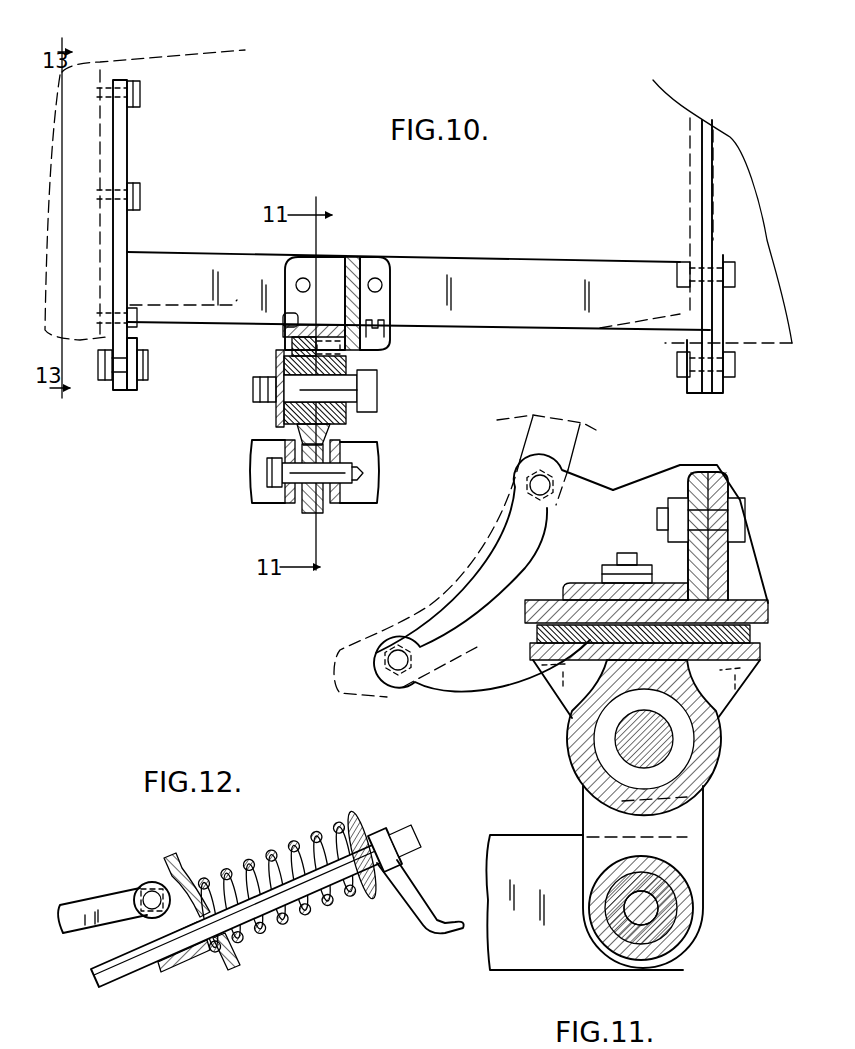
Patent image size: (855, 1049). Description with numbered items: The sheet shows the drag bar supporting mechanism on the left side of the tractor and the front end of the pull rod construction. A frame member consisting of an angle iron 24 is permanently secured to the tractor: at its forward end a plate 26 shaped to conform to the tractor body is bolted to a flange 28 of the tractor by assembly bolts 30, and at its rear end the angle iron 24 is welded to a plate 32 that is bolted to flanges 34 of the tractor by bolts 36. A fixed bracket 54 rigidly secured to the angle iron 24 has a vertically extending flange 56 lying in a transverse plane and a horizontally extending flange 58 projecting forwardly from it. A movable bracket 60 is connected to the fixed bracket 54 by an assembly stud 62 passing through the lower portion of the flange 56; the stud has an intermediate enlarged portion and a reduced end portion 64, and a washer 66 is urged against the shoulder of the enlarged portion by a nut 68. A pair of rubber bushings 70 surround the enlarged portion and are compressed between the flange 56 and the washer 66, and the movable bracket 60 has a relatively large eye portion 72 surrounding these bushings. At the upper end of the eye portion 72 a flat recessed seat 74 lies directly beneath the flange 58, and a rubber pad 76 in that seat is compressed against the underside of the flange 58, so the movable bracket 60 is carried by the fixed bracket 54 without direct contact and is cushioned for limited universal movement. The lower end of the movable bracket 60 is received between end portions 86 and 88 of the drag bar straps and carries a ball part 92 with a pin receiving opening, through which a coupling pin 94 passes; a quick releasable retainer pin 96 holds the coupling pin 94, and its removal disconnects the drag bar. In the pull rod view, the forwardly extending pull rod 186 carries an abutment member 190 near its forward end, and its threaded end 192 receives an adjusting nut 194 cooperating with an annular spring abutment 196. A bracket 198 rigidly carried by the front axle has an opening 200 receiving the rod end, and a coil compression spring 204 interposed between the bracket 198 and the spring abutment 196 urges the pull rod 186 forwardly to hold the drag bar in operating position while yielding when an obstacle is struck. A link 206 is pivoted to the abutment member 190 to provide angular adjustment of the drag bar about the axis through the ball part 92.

In FIG. 10, the angle iron 24 is at (478, 258).
In FIG. 11, the angle iron 24 is at (668, 583).
In FIG. 10, the plate 26 is at (127, 138).
In FIG. 10, the flange 28 is at (139, 226).
In FIG. 10, the assembly bolts 30 is at (140, 93).
In FIG. 10, the plate 32 is at (717, 312).
In FIG. 11, the plate 32 is at (505, 690).
In FIG. 10, the flanges 34 is at (690, 193).
In FIG. 11, the flanges 34 is at (585, 425).
In FIG. 10, the bolts 36 is at (677, 360).
In FIG. 10, the fixed bracket 54 is at (368, 262).
In FIG. 10, the vertically extending flange 56 is at (392, 350).
In FIG. 11, the vertically extending flange 56 is at (570, 680).
In FIG. 10, the horizontally extending flange 58 is at (234, 308).
In FIG. 11, the horizontally extending flange 58 is at (550, 600).
In FIG. 10, the movable bracket 60 is at (308, 505).
In FIG. 11, the movable bracket 60 is at (580, 806).
In FIG. 10, the assembly stud 62 is at (378, 388).
In FIG. 11, the assembly stud 62 is at (627, 737).
In FIG. 10, the reduced end portion 64 is at (257, 392).
In FIG. 10, the washer 66 is at (280, 363).
In FIG. 10, the nut 68 is at (262, 408).
In FIG. 10, the rubber bushings 70 is at (303, 433).
In FIG. 11, the rubber bushings 70 is at (613, 762).
In FIG. 10, the eye portion 72 is at (330, 427).
In FIG. 10, the recessed seat 74 is at (287, 342).
In FIG. 11, the recessed seat 74 is at (733, 695).
In FIG. 10, the rubber pad 76 is at (313, 337).
In FIG. 11, the rubber pad 76 is at (748, 648).
In FIG. 10, the end portion 86 is at (262, 500).
In FIG. 11, the end portion 86 is at (584, 902).
In FIG. 10, the end portion 88 is at (365, 488).
In FIG. 10, the ball part 92 is at (300, 505).
In FIG. 11, the ball part 92 is at (657, 908).
In FIG. 10, the coupling pin 94 is at (272, 477).
In FIG. 11, the coupling pin 94 is at (647, 893).
In FIG. 10, the retainer pin 96 is at (360, 507).
In FIG. 12, the pull rod 186 is at (127, 973).
In FIG. 12, the abutment member 190 is at (187, 962).
In FIG. 12, the threaded portion 192 is at (358, 883).
In FIG. 12, the adjusting nut 194 is at (382, 827).
In FIG. 12, the annular spring abutment 196 is at (365, 823).
In FIG. 12, the bracket 198 is at (180, 877).
In FIG. 12, the opening 200 is at (247, 953).
In FIG. 12, the coil compression spring 204 is at (280, 850).
In FIG. 12, the link 206 is at (90, 900).